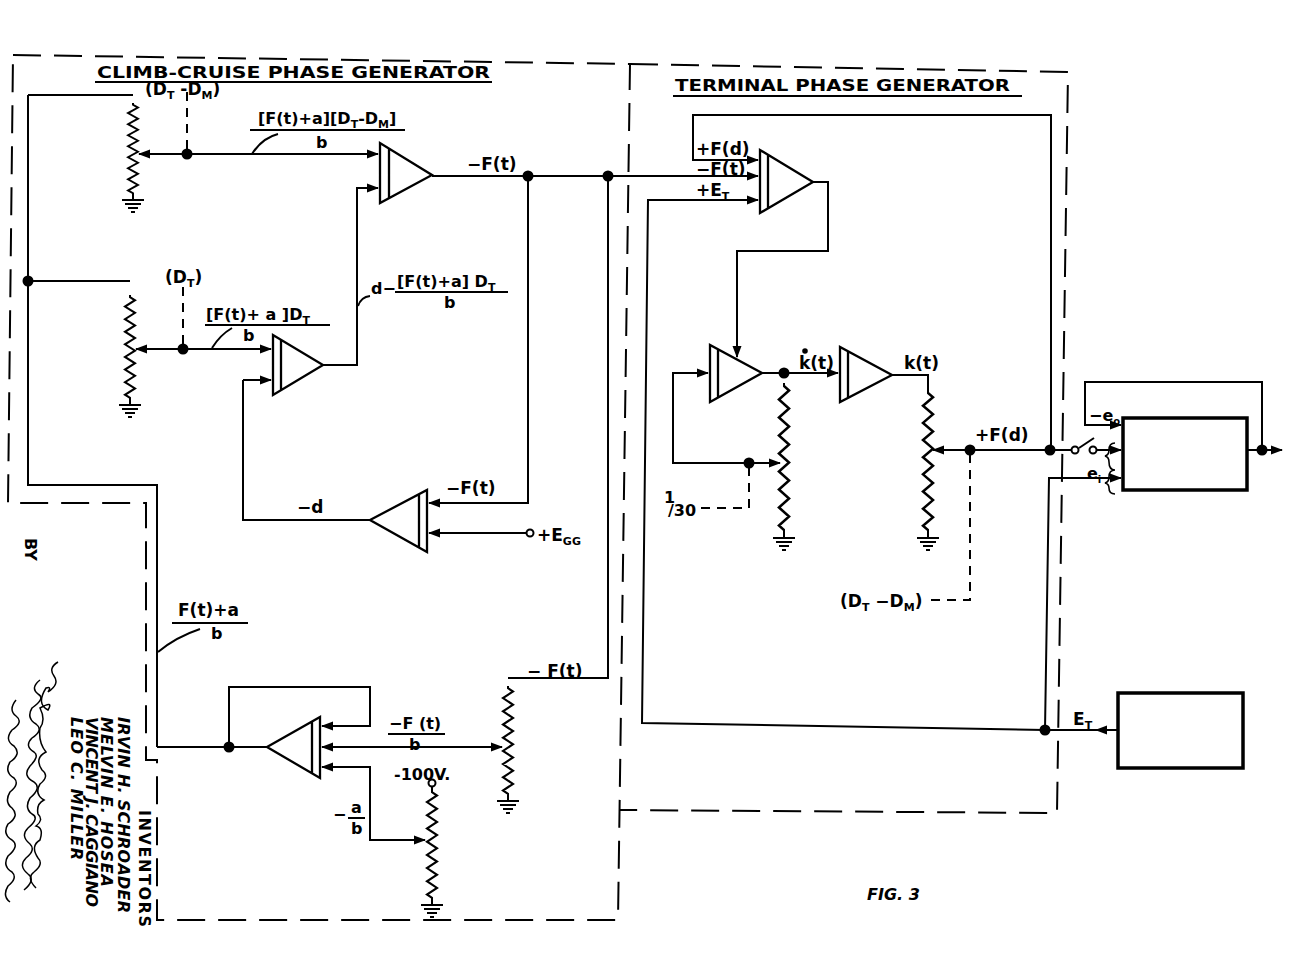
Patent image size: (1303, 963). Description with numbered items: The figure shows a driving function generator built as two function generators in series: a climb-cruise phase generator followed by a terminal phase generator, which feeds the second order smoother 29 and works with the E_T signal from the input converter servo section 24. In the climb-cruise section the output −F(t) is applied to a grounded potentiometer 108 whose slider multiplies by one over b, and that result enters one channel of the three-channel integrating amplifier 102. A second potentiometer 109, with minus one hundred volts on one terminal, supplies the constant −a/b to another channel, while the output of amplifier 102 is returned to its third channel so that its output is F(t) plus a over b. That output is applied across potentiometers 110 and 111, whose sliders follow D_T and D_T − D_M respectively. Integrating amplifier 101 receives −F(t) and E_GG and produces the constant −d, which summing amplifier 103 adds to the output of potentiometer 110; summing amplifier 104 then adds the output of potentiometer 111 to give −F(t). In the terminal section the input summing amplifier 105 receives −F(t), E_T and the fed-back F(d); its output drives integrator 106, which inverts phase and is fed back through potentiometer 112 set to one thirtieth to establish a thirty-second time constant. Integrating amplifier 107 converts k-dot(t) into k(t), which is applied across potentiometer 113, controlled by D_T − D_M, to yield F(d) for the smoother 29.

The integrating amplifier 101 is at (406, 500).
The integrating amplifier 102 is at (292, 757).
The summing amplifier 103 is at (305, 380).
The summing amplifier 104 is at (412, 161).
The input summing amplifier 105 is at (791, 166).
The integrator 106 is at (746, 362).
The integrating amplifier 107 is at (861, 350).
The potentiometer 108 is at (513, 786).
The potentiometer 109 is at (440, 878).
The potentiometer 110 is at (125, 336).
The potentiometer 111 is at (128, 140).
The potentiometer 112 is at (779, 442).
The potentiometer 113 is at (922, 470).
The input converter servo section 24 is at (1181, 693).
The second order smoother 29 is at (1209, 491).